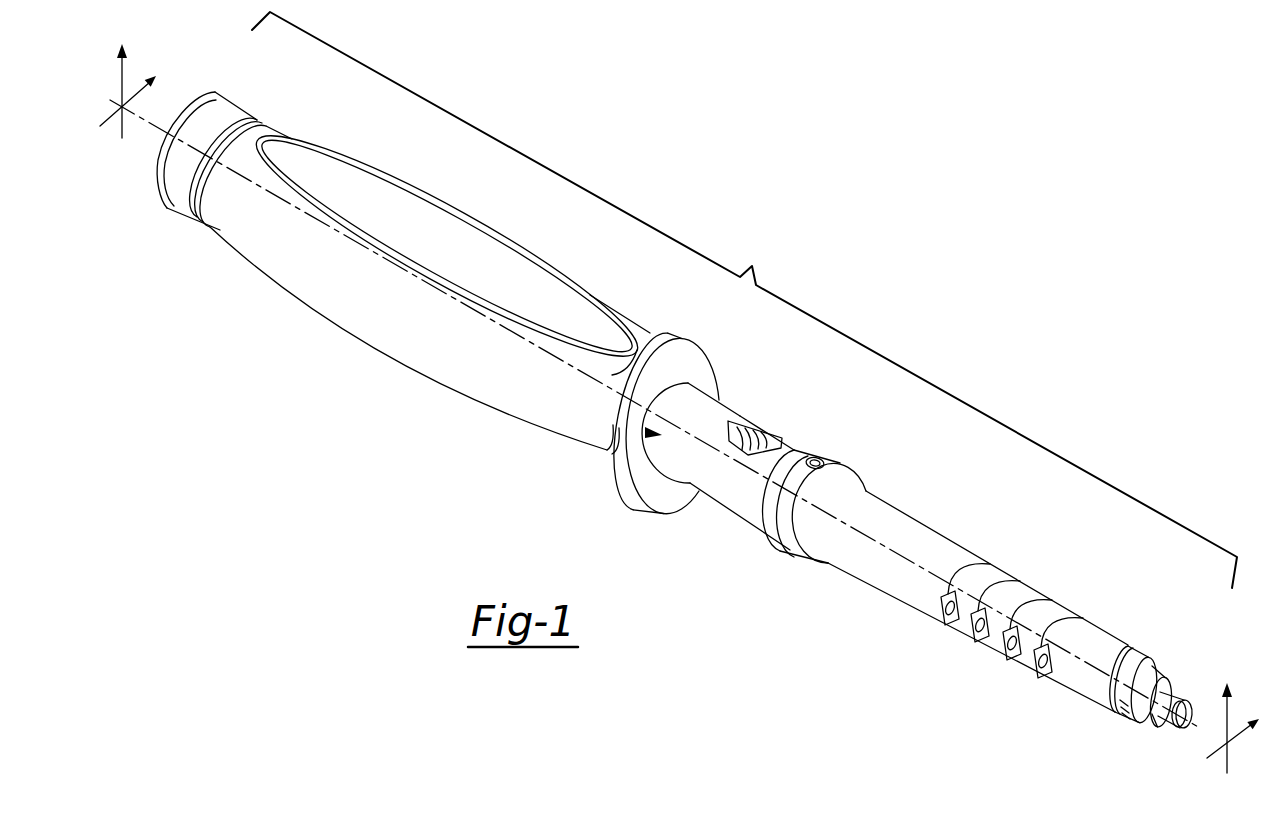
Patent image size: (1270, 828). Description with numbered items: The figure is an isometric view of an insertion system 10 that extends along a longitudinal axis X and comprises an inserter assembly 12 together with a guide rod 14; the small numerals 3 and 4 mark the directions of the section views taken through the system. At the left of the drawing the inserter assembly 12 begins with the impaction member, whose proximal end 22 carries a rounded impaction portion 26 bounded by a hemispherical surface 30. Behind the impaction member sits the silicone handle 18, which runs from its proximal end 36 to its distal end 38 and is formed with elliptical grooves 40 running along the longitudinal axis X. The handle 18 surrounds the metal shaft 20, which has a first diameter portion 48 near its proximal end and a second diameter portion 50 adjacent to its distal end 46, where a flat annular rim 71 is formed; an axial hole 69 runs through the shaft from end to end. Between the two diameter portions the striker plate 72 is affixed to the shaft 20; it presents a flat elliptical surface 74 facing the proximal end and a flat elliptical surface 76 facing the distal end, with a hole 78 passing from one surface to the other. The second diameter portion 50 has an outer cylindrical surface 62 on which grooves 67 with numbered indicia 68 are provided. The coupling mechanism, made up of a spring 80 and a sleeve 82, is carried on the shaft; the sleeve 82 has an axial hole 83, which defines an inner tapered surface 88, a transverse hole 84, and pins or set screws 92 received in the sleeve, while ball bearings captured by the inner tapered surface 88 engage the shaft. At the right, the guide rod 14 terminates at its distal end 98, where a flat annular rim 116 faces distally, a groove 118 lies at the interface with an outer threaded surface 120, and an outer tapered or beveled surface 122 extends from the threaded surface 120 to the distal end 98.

The insertion system 10 is at (698, 136).
The inserter assembly 12 is at (744, 300).
The guide rod 14 is at (1112, 694).
The handle 18 is at (441, 195).
The shaft 20 is at (648, 430).
The proximal end 22 is at (211, 92).
The rounded impaction portion 26 is at (180, 214).
The hemispherical surface 30 is at (150, 181).
The proximal end 36 is at (260, 117).
The distal end 38 is at (607, 447).
The elliptical grooves 40 is at (339, 172).
The distal end 46 is at (1117, 664).
The first diameter portion 48 is at (673, 453).
The second diameter portion 50 is at (953, 567).
The outer cylindrical surface 62 is at (912, 595).
The grooves 67 is at (1060, 607).
The numbered indicia 68 is at (1033, 667).
The hole 69 is at (1117, 720).
The flat annular surface or rim 71 is at (1141, 655).
The striker plate 72 is at (667, 334).
The flat elliptical surface 74 is at (612, 372).
The flat elliptical surface 76 is at (702, 346).
The hole 78 is at (698, 386).
The spring 80 is at (757, 430).
The sleeve 82 is at (748, 517).
The axial hole 83 is at (832, 560).
The hole 84 is at (774, 434).
The inner tapered surface 88 is at (866, 498).
The pins or set screws 92 is at (817, 456).
The distal end 98 is at (1187, 714).
The flat annular surface or rim 116 is at (1154, 730).
The groove 118 is at (1161, 690).
The outer threaded surface 120 is at (1172, 698).
The outer tapered or beveled surface 122 is at (1178, 732).
The longitudinal axis X is at (440, 294).
The section view 3 direction 3 is at (678, 423).
The section view 4 direction 4 is at (671, 427).